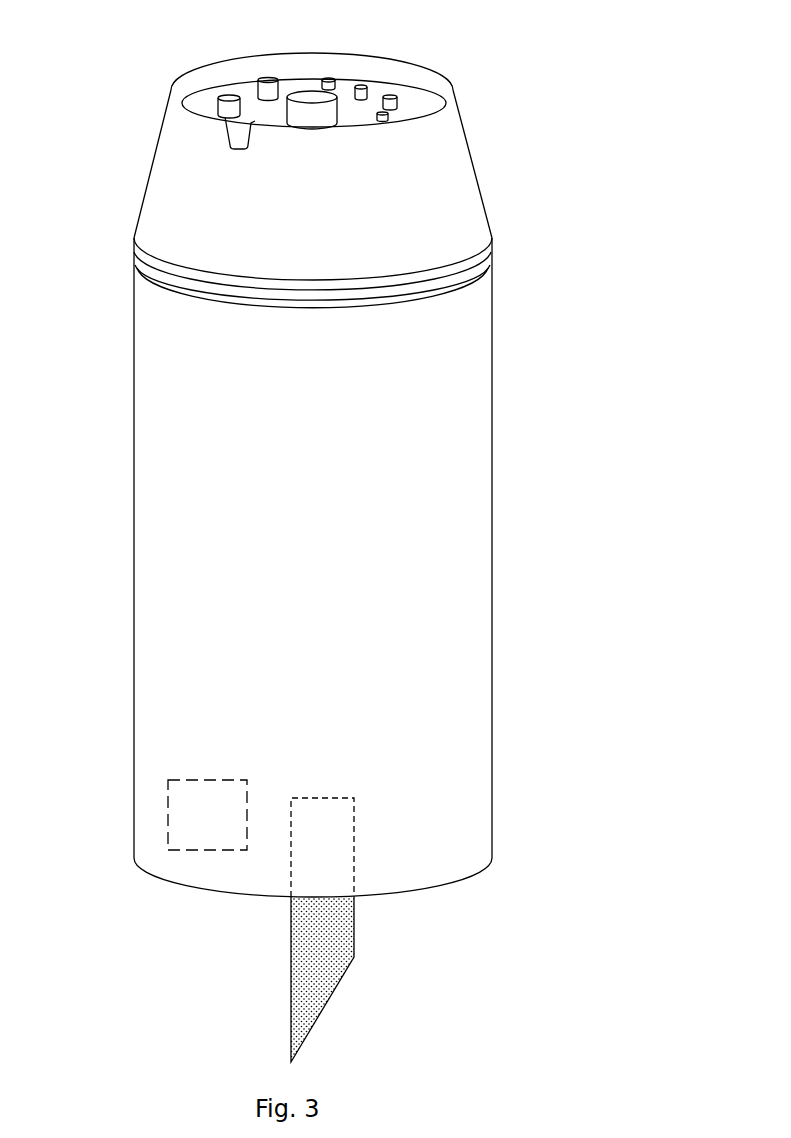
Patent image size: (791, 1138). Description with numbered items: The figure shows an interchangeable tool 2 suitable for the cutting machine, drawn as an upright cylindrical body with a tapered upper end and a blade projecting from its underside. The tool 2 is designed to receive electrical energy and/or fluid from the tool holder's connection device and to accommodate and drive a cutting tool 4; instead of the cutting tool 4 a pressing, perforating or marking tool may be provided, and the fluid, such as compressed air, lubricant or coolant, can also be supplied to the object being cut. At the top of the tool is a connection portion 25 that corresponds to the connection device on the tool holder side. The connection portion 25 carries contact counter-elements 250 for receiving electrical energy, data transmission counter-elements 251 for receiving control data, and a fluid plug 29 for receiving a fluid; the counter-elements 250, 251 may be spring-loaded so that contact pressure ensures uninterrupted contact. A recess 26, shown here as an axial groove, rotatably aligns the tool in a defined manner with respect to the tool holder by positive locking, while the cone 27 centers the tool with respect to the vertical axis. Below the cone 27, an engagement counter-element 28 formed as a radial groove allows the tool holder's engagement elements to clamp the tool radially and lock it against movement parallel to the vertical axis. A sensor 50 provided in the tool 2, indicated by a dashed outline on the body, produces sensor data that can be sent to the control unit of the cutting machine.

The tool 2 is at (538, 344).
The cutting tool 4 is at (350, 950).
The connection portion 25 is at (281, 46).
The recess 26 is at (244, 151).
The cone 27 is at (401, 203).
The engagement counter-element 28 is at (492, 266).
The fluid plug 29 is at (341, 102).
The sensor 50 is at (167, 822).
The contact counter-elements 250 is at (218, 107).
The data transmission counter-elements 251 is at (403, 100).